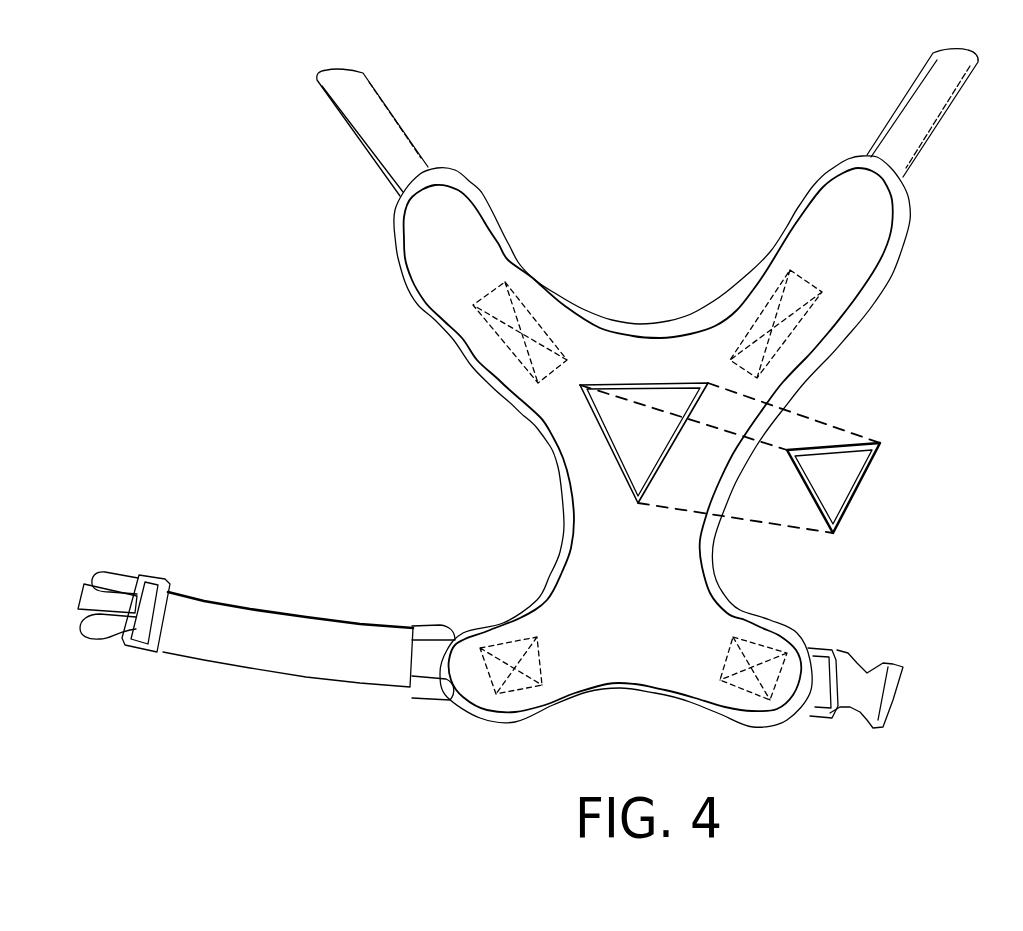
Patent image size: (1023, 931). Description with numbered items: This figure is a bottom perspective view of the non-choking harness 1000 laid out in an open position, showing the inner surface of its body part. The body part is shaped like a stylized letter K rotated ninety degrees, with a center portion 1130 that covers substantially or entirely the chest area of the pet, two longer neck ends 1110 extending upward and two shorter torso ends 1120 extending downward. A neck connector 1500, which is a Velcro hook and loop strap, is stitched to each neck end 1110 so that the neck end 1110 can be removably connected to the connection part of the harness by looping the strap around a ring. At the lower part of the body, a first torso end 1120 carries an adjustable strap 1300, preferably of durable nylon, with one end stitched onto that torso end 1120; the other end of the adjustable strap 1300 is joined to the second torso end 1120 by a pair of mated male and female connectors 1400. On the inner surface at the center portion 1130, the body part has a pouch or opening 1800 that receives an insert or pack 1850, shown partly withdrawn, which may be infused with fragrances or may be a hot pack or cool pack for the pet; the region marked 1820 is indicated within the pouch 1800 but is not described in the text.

The non-choking harness 1000 is at (652, 322).
The neck end 1110 is at (473, 180).
The torso end 1120 is at (457, 623).
The center portion 1130 is at (707, 433).
The adjustable strap 1300 is at (244, 602).
The mated connector 1400 is at (120, 570).
The neck connector 1500 is at (364, 76).
The pouch or opening 1800 is at (680, 385).
The plate marking 1820 is at (646, 408).
The insert or pack 1850 is at (847, 480).